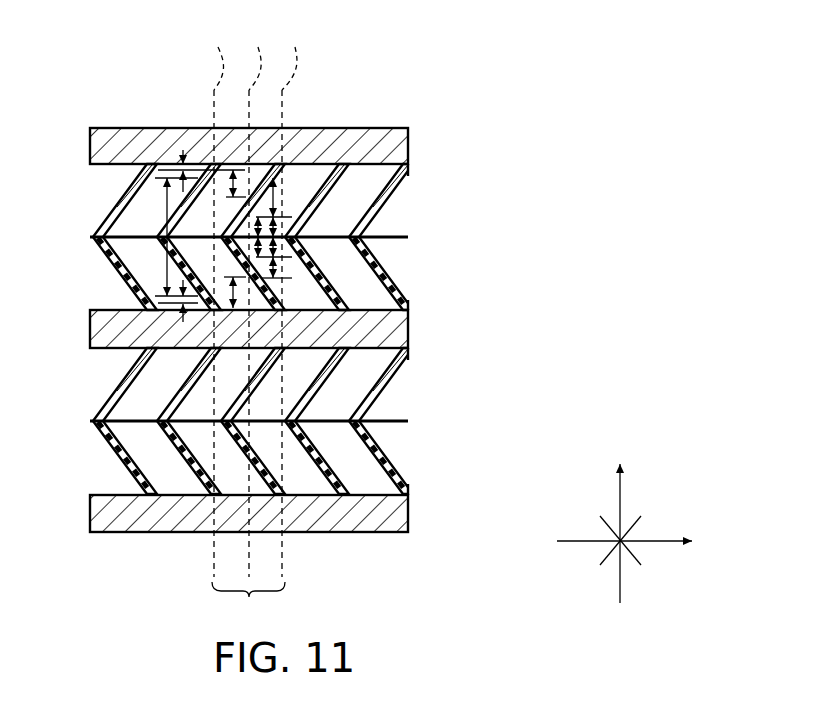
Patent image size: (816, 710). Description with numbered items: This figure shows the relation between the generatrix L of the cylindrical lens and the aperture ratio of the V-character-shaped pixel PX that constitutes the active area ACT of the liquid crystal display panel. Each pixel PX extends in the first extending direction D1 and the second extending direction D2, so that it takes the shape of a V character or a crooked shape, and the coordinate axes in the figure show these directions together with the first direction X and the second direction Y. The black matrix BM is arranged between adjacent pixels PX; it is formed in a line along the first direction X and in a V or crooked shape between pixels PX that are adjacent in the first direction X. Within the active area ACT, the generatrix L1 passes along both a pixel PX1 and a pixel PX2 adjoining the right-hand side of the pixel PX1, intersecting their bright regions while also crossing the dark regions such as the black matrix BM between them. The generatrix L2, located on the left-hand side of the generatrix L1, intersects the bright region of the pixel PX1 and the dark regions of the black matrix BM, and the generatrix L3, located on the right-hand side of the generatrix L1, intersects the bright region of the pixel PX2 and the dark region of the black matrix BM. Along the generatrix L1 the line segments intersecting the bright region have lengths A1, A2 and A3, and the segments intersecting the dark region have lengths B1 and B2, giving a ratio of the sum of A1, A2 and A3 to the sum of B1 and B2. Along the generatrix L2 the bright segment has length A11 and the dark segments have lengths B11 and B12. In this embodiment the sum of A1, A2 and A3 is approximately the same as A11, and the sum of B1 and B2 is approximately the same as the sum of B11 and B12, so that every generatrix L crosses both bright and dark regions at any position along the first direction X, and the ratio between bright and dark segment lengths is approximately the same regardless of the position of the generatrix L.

The active area ACT is at (312, 313).
The black matrix BM is at (410, 141).
The pixel PX is at (368, 179).
The pixel PX1 is at (205, 256).
The pixel PX2 is at (300, 300).
The generatrix L1 is at (259, 301).
The generatrix L2 is at (219, 301).
The generatrix L3 is at (295, 301).
The generatrix L is at (248, 602).
The line segment length A1 is at (243, 184).
The line segment length A2 is at (290, 228).
The line segment length A3 is at (236, 306).
The line segment length A11 is at (144, 207).
The line segment length B1 is at (312, 188).
The line segment length B2 is at (298, 273).
The line segment length B11 is at (142, 172).
The line segment length B12 is at (142, 300).
The first direction X is at (635, 542).
The second direction Y is at (619, 521).
The first extending direction D1 is at (637, 521).
The second extending direction D2 is at (637, 566).